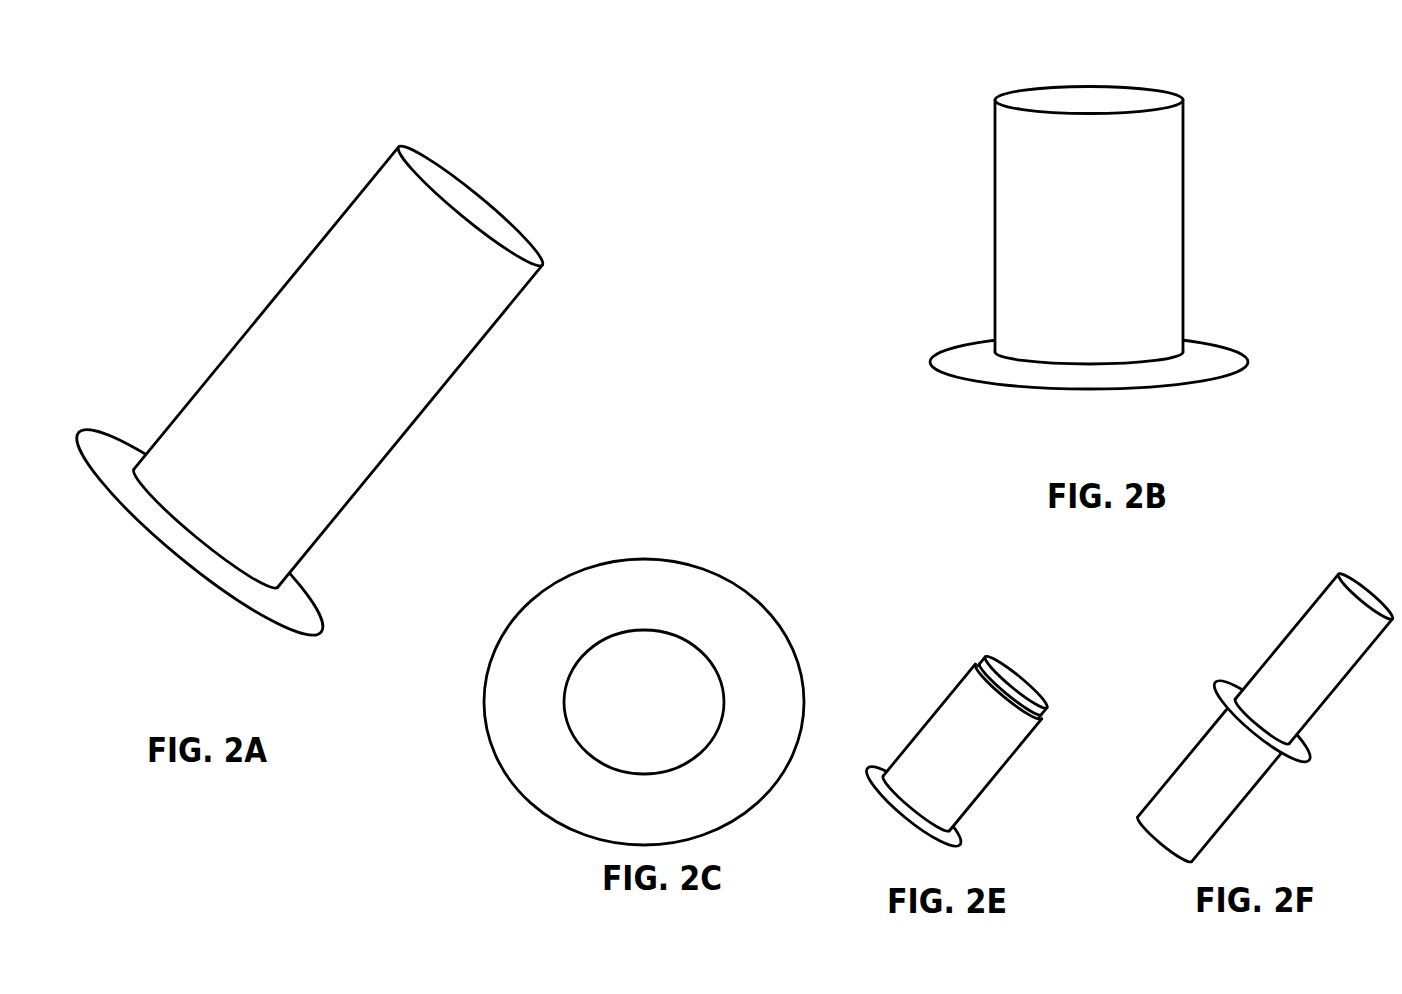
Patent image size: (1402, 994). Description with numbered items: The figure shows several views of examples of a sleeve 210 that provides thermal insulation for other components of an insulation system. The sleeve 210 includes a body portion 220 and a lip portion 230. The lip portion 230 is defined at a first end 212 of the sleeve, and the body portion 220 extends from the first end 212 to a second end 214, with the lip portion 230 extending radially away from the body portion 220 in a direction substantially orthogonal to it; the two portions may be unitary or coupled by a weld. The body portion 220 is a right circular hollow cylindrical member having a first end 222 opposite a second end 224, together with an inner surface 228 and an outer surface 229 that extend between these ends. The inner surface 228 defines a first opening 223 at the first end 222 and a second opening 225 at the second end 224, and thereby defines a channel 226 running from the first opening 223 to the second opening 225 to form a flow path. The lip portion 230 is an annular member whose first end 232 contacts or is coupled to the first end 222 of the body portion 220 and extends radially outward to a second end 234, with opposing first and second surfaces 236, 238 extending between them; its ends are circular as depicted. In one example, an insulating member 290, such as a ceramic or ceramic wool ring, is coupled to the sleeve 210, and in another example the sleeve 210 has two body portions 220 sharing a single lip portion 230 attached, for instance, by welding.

In FIG. 2A, the sleeve 210 is at (321, 384).
In FIG. 2B, the sleeve 210 is at (1042, 229).
In FIG. 2C, the sleeve 210 is at (618, 695).
In FIG. 2F, the sleeve 210 is at (1265, 702).
In FIG. 2A, the first end 212 is at (252, 679).
In FIG. 2A, the second end 214 is at (434, 94).
In FIG. 2A, the body portion 220 is at (372, 318).
In FIG. 2B, the body portion 220 is at (1083, 200).
In FIG. 2E, the body portion 220 is at (1027, 683).
In FIG. 2F, the body portion 220 is at (1265, 718).
In FIG. 2A, the first end 222 is at (134, 460).
In FIG. 2B, the first end 222 is at (995, 333).
In FIG. 2A, the first opening 223 is at (86, 532).
In FIG. 2A, the second end 224 is at (398, 147).
In FIG. 2B, the second end 224 is at (995, 100).
In FIG. 2A, the second opening 225 is at (536, 236).
In FIG. 2A, the channel 226 is at (547, 134).
In FIG. 2B, the channel 226 is at (1130, 62).
In FIG. 2C, the channel 226 is at (626, 691).
In FIG. 2A, the inner surface 228 is at (427, 163).
In FIG. 2B, the inner surface 228 is at (1022, 100).
In FIG. 2A, the outer surface 229 is at (362, 212).
In FIG. 2B, the outer surface 229 is at (1018, 178).
In FIG. 2A, the lip portion 230 is at (82, 455).
In FIG. 2F, the lip portion 230 is at (1308, 762).
In FIG. 2A, the first end 232 is at (280, 582).
In FIG. 2B, the first end 232 is at (1183, 333).
In FIG. 2A, the second end 234 is at (78, 434).
In FIG. 2B, the second end 234 is at (930, 362).
In FIG. 2C, the second end 234 is at (608, 562).
In FIG. 2E, the second end 234 is at (957, 840).
In FIG. 2A, the first surface 236 is at (191, 586).
In FIG. 2B, the first surface 236 is at (1029, 396).
In FIG. 2A, the second surface 238 is at (312, 621).
In FIG. 2B, the second surface 238 is at (1213, 352).
In FIG. 2E, the insulating member 290 is at (1023, 753).